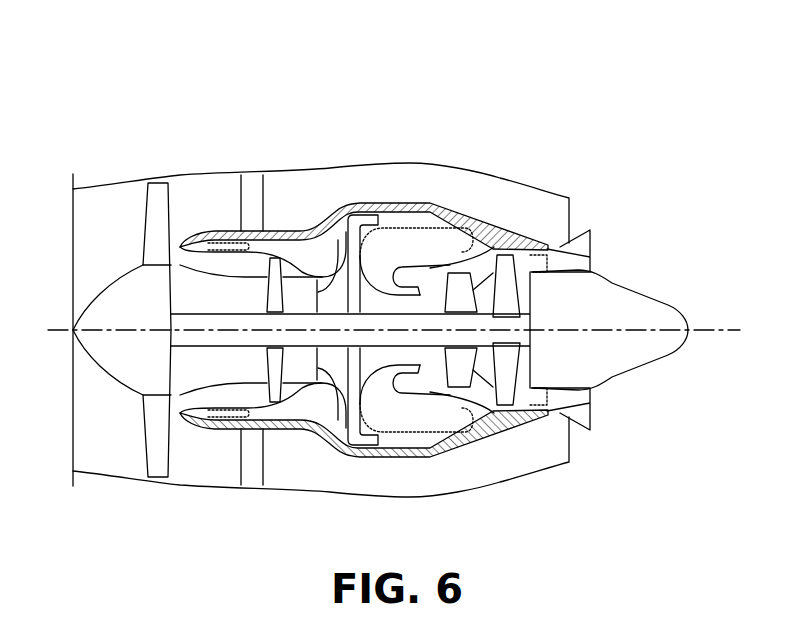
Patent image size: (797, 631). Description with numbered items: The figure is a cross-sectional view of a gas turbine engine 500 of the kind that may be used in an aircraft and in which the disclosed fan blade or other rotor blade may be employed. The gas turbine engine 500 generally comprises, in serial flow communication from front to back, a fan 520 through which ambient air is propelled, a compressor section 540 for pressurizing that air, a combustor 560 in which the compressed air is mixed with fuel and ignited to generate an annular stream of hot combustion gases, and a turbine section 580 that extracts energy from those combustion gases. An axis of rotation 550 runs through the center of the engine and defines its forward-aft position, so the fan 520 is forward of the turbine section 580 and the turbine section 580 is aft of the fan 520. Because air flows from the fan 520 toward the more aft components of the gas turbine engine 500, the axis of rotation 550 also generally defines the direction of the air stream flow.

The gas turbine engine 500 is at (60, 63).
The fan 520 is at (153, 435).
The compressor section 540 is at (303, 270).
The axis of rotation 550 is at (740, 329).
The combustor 560 is at (425, 242).
The turbine section 580 is at (483, 395).